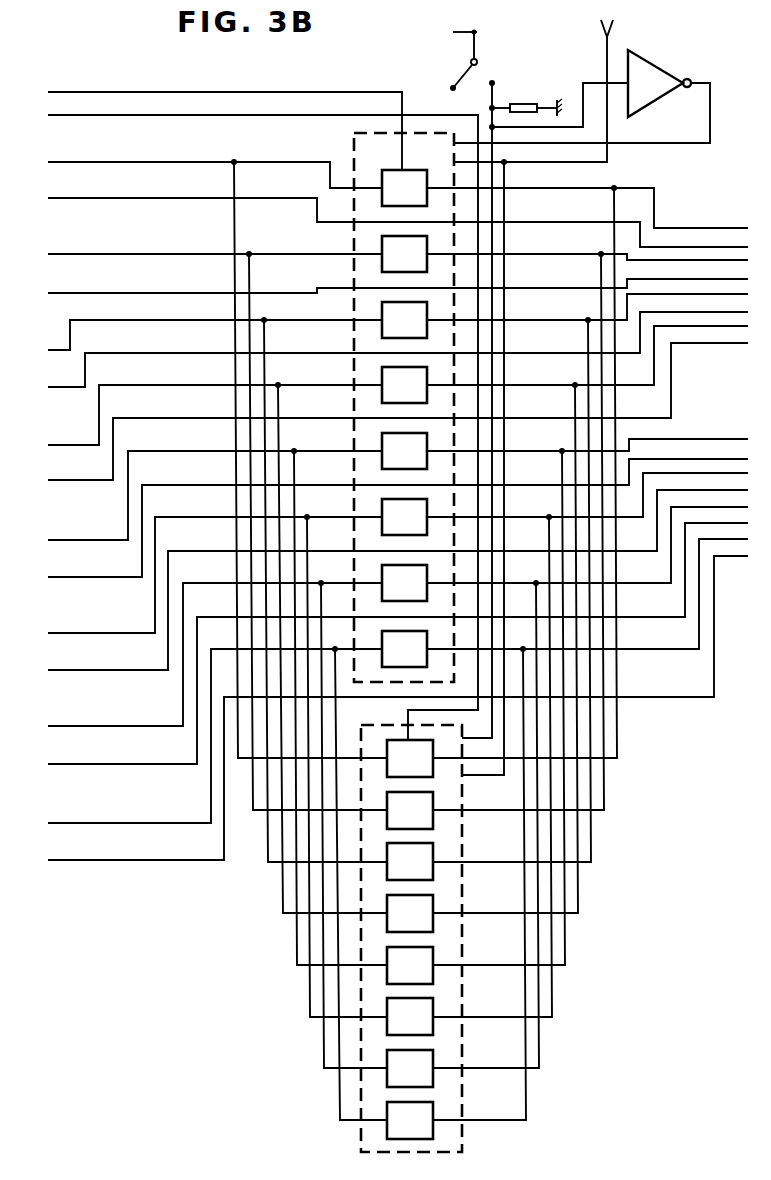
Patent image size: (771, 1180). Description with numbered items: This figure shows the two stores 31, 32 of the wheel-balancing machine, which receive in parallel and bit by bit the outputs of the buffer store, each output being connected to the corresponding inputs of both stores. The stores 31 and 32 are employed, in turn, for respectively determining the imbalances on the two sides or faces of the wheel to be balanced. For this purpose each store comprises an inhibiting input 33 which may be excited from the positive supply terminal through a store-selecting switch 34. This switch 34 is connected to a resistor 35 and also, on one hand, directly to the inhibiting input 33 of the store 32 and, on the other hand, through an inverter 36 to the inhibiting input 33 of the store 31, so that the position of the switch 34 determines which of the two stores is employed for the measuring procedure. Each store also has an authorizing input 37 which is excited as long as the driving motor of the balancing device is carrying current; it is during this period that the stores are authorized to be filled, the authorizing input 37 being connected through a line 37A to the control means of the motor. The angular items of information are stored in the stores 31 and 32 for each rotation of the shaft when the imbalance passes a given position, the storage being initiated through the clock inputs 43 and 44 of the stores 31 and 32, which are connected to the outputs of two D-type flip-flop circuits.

The store 31 is at (352, 143).
The store 32 is at (360, 1133).
The inhibiting input 33 is at (455, 142).
The store-selecting switch 34 is at (469, 64).
The resistor 35 is at (521, 103).
The inverter 36 is at (666, 74).
The authorizing input 37 is at (455, 176).
The line 37A is at (607, 57).
The clock input 43 is at (401, 133).
The clock input 44 is at (407, 723).